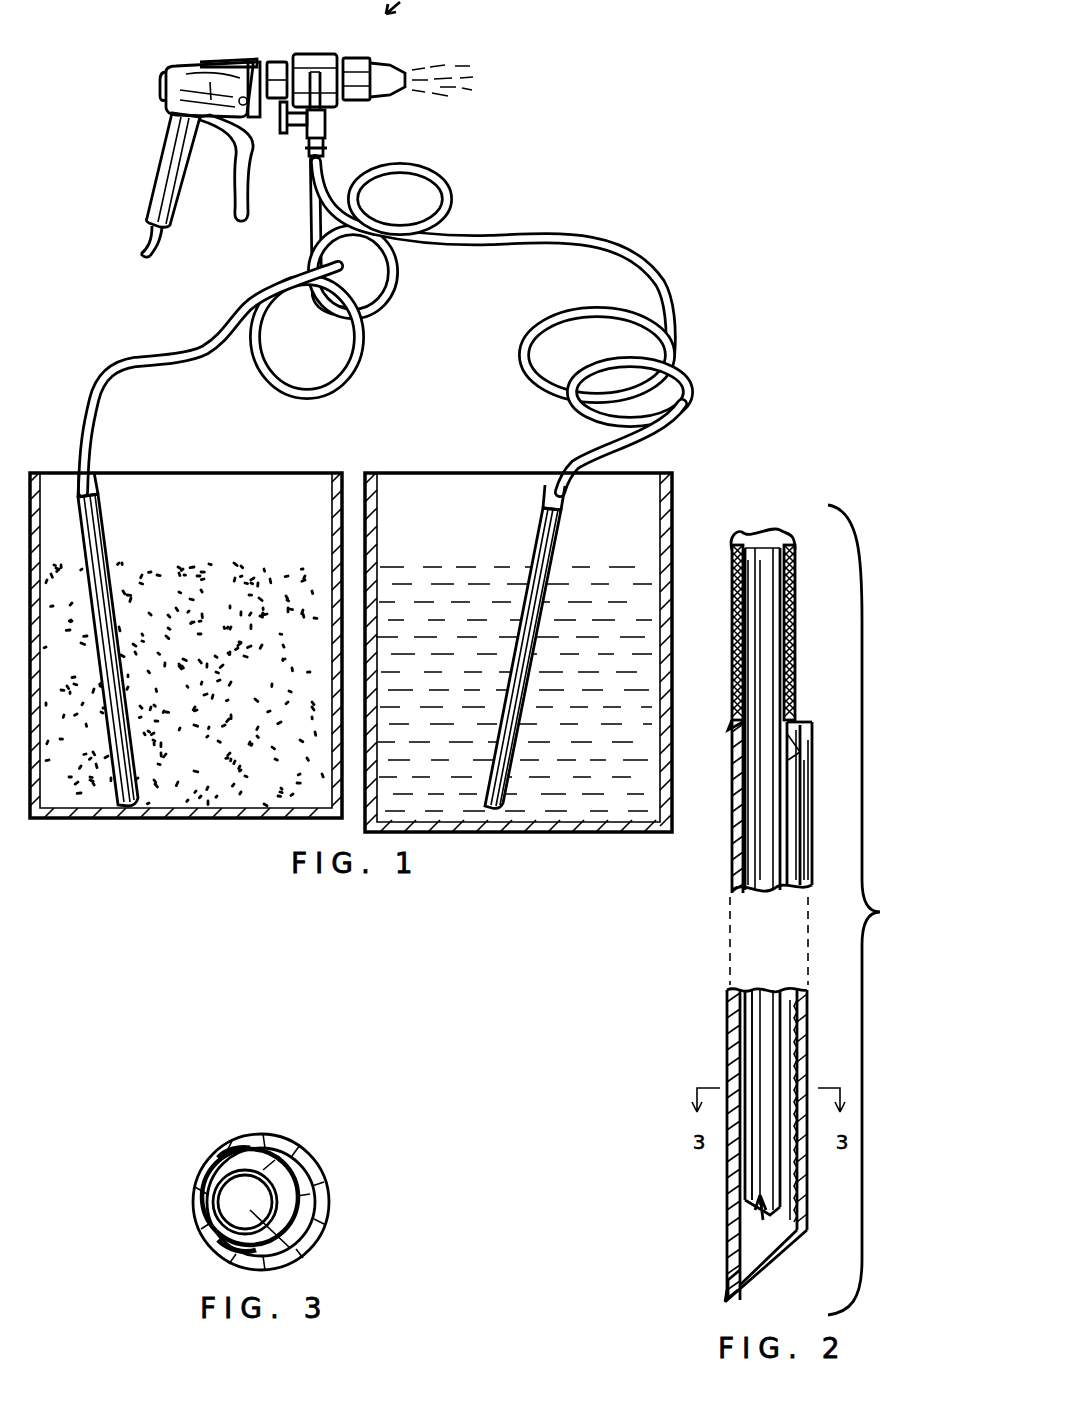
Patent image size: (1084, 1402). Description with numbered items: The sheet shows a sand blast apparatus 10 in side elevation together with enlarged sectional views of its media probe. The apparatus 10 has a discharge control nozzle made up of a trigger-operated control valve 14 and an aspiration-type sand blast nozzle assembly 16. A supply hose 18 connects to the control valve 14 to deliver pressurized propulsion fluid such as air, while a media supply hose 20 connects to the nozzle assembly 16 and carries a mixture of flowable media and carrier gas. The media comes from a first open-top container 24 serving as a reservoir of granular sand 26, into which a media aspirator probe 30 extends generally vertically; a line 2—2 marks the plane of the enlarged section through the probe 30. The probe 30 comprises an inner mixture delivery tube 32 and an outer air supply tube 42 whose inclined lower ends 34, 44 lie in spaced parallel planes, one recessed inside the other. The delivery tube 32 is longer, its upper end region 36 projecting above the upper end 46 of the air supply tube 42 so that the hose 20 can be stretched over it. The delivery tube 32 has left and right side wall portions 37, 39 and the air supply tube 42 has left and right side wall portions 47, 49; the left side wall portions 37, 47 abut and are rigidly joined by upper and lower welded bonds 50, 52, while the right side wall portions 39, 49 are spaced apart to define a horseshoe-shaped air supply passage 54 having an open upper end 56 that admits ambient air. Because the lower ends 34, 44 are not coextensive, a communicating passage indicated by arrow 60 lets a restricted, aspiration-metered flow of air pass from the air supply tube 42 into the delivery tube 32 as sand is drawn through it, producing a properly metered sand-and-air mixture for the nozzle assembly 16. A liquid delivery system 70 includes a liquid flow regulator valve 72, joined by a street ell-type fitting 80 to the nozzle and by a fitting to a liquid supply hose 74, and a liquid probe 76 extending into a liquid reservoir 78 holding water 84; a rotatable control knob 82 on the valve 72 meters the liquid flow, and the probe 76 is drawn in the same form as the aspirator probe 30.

In FIG. 1, the section line 2— 2 is at (86, 418).
In FIG. 1, the sand blast apparatus 10 is at (116, 98).
In FIG. 1, the trigger-operated control valve 14 is at (216, 50).
In FIG. 1, the sand blast nozzle assembly 16 is at (336, 46).
In FIG. 1, the supply hose 18 is at (143, 256).
In FIG. 1, the media supply hose 20 is at (202, 346).
In FIG. 2, the media supply hose 20 is at (736, 538).
In FIG. 1, the first open-top container 24 is at (345, 474).
In FIG. 1, the granular sand 26 is at (168, 575).
In FIG. 1, the media aspirator probe 30 is at (110, 520).
In FIG. 2, the media aspirator probe 30 is at (656, 1088).
In FIG. 3, the media aspirator probe 30 is at (306, 1114).
In FIG. 2, the mixture delivery tube 32 is at (793, 761).
In FIG. 3, the mixture delivery tube 32 is at (273, 1162).
In FIG. 2, the lower end 34 is at (768, 1273).
In FIG. 2, the upper end region 36 is at (792, 617).
In FIG. 3, the upper end region 36 is at (245, 1202).
In FIG. 2, the left side wall portion 37 is at (752, 875).
In FIG. 3, the left side wall portion 37 is at (214, 1228).
In FIG. 2, the right side wall portion 39 is at (791, 897).
In FIG. 3, the right side wall portion 39 is at (312, 1246).
In FIG. 2, the air supply tube 42 is at (812, 795).
In FIG. 3, the air supply tube 42 is at (326, 1144).
In FIG. 2, the lower end 44 is at (770, 1236).
In FIG. 2, the upper end 46 is at (811, 727).
In FIG. 2, the left side wall portion 47 is at (735, 852).
In FIG. 3, the left side wall portion 47 is at (216, 1214).
In FIG. 2, the right side wall portion 49 is at (810, 883).
In FIG. 3, the right side wall portion 49 is at (328, 1204).
In FIG. 2, the upper bond 50 is at (762, 695).
In FIG. 2, the lower bond 52 is at (744, 1264).
In FIG. 3, the lower bond 52 is at (238, 1146).
In FIG. 2, the air supply passage 54 is at (803, 847).
In FIG. 3, the air supply passage 54 is at (300, 1192).
In FIG. 2, the open upper end 56 is at (796, 734).
In FIG. 2, the communicating passage 60 is at (777, 1223).
In FIG. 1, the liquid delivery system 70 is at (645, 221).
In FIG. 1, the liquid flow regulator valve 72 is at (326, 122).
In FIG. 1, the liquid supply hose 74 is at (454, 236).
In FIG. 1, the liquid probe 76 is at (566, 536).
In FIG. 1, the liquid reservoir 78 is at (680, 488).
In FIG. 1, the street ell-type fitting 80 is at (346, 60).
In FIG. 1, the rotatable control knob 82 is at (296, 128).
In FIG. 1, the water 84 is at (420, 570).